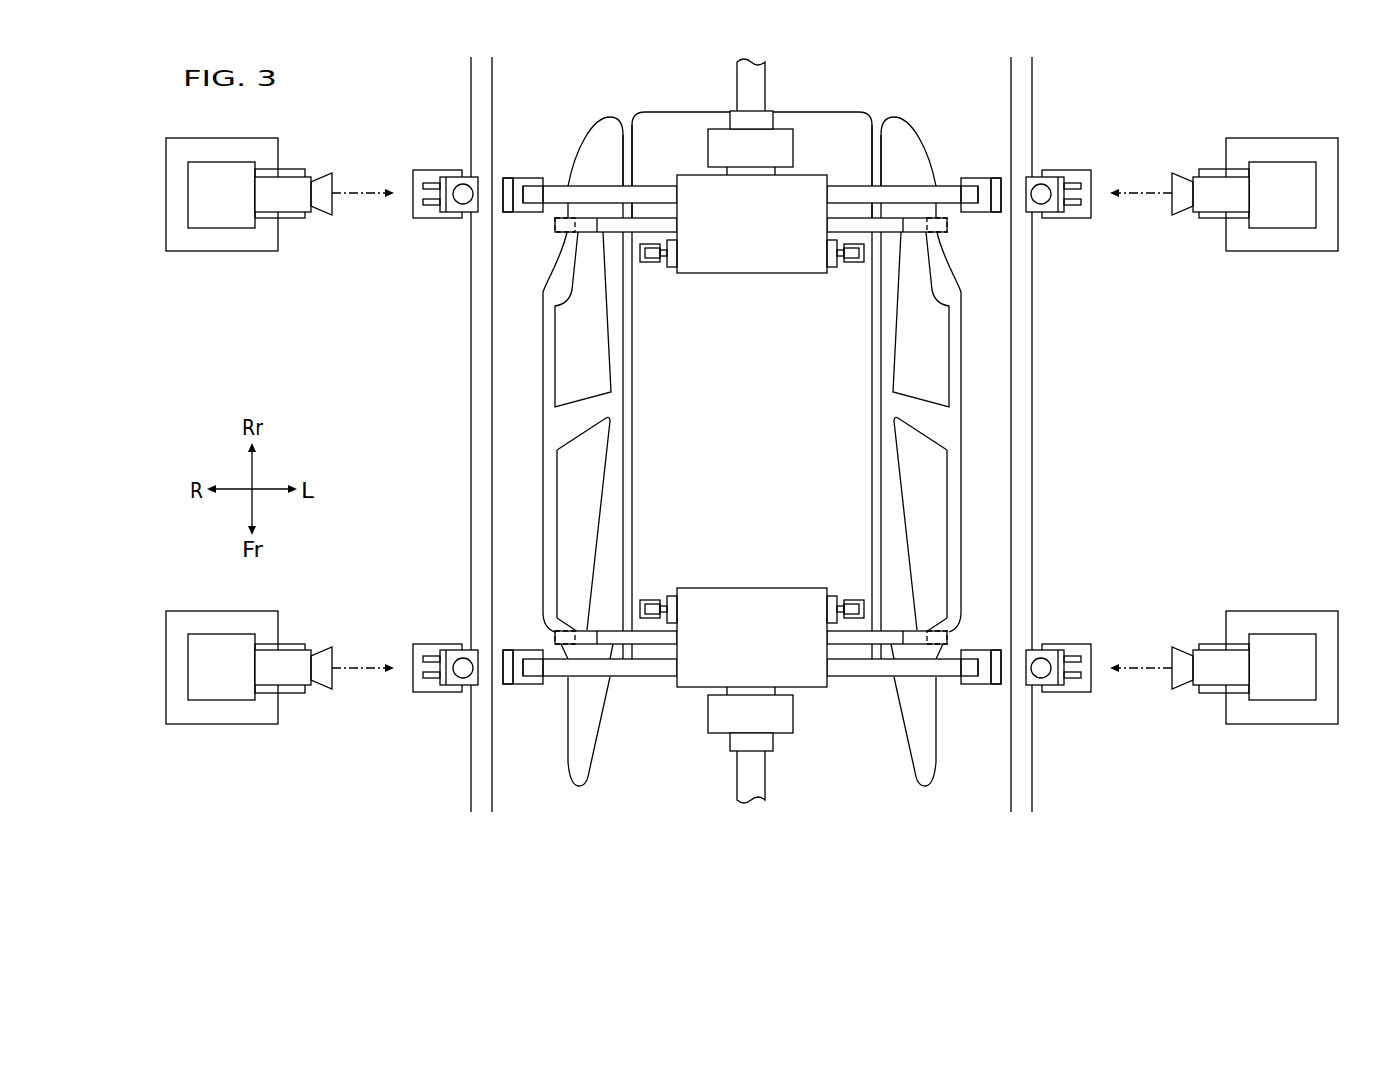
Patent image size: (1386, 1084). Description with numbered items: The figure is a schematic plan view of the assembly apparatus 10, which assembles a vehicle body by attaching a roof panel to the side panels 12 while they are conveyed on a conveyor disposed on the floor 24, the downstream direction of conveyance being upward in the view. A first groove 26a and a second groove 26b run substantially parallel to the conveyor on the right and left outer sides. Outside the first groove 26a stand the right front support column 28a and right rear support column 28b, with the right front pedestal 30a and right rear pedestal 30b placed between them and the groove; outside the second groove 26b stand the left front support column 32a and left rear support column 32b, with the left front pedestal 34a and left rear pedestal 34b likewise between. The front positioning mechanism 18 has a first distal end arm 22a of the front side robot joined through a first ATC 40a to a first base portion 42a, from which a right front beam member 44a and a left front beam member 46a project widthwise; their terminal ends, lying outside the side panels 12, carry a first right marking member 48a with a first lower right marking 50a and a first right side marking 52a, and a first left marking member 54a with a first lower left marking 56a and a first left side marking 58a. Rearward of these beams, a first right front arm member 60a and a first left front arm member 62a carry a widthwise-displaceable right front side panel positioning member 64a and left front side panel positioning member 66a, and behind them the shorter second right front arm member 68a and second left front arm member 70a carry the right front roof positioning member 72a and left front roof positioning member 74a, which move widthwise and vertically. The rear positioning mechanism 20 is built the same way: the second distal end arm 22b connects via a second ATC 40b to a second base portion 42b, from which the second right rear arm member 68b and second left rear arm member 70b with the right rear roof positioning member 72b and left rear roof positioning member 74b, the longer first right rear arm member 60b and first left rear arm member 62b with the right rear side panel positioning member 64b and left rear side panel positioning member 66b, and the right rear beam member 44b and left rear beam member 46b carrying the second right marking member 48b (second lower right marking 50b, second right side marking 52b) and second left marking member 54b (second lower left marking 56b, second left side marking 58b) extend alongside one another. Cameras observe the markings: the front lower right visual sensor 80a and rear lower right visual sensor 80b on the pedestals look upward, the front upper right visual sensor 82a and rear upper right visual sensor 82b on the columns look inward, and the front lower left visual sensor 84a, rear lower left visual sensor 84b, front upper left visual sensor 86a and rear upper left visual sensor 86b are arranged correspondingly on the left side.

The assembly apparatus 10 is at (358, 108).
The side panel 12 is at (546, 370).
The front positioning mechanism 18 is at (750, 669).
The rear positioning mechanism 20 is at (750, 202).
The first distal end arm 22a is at (758, 776).
The second distal end arm 22b is at (756, 80).
The floor 24 is at (796, 392).
The first groove 26a is at (472, 430).
The second groove 26b is at (1031, 468).
The right front support column 28a is at (280, 649).
The right rear support column 28b is at (280, 215).
The right front pedestal 30a is at (415, 688).
The right rear pedestal 30b is at (415, 174).
The left front support column 32a is at (1223, 649).
The left rear support column 32b is at (1222, 215).
The left front pedestal 34a is at (1089, 689).
The left rear pedestal 34b is at (1089, 174).
The first ATC 40a is at (720, 723).
The second ATC 40b is at (722, 138).
The first base portion 42a is at (750, 592).
The second base portion 42b is at (748, 267).
The right front beam member 44a is at (627, 670).
The right rear beam member 44b is at (605, 193).
The left front beam member 46a is at (877, 670).
The left rear beam member 46b is at (900, 193).
The first right marking member 48a is at (530, 694).
The second right marking member 48b is at (531, 172).
The first lower right marking 50a is at (516, 686).
The second lower right marking 50b is at (514, 178).
The first right side marking 52a is at (503, 660).
The second right side marking 52b is at (503, 202).
The first left marking member 54a is at (971, 694).
The second left marking member 54b is at (971, 172).
The first lower left marking 56a is at (990, 686).
The second lower left marking 56b is at (990, 178).
The first left side marking 58a is at (1003, 659).
The second left side marking 58b is at (1003, 203).
The first right front arm member 60a is at (662, 644).
The first right rear arm member 60b is at (650, 225).
The first left front arm member 62a is at (840, 644).
The first left rear arm member 62b is at (853, 225).
The right front side panel positioning member 64a is at (581, 631).
The right rear side panel positioning member 64b is at (556, 225).
The left front side panel positioning member 66a is at (925, 631).
The left rear side panel positioning member 66b is at (947, 226).
The second right front arm member 68a is at (670, 596).
The second right rear arm member 68b is at (670, 267).
The second left front arm member 70a is at (832, 596).
The second left rear arm member 70b is at (832, 267).
The right front roof positioning member 72a is at (648, 598).
The right rear roof positioning member 72b is at (648, 262).
The left front roof positioning member 74a is at (855, 598).
The left rear roof positioning member 74b is at (855, 262).
The front lower right visual sensor 80a is at (460, 674).
The rear lower right visual sensor 80b is at (460, 188).
The front upper right visual sensor 82a is at (325, 660).
The rear upper right visual sensor 82b is at (327, 203).
The front lower left visual sensor 84a is at (1044, 672).
The rear lower left visual sensor 84b is at (1044, 190).
The front upper left visual sensor 86a is at (1177, 660).
The rear upper left visual sensor 86b is at (1177, 203).